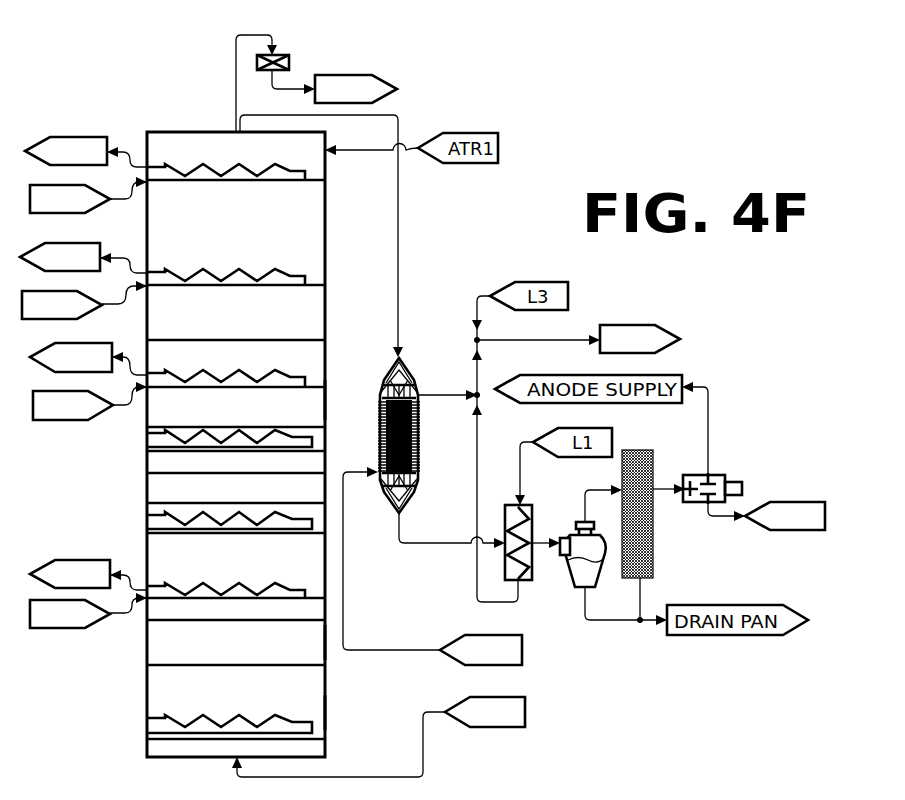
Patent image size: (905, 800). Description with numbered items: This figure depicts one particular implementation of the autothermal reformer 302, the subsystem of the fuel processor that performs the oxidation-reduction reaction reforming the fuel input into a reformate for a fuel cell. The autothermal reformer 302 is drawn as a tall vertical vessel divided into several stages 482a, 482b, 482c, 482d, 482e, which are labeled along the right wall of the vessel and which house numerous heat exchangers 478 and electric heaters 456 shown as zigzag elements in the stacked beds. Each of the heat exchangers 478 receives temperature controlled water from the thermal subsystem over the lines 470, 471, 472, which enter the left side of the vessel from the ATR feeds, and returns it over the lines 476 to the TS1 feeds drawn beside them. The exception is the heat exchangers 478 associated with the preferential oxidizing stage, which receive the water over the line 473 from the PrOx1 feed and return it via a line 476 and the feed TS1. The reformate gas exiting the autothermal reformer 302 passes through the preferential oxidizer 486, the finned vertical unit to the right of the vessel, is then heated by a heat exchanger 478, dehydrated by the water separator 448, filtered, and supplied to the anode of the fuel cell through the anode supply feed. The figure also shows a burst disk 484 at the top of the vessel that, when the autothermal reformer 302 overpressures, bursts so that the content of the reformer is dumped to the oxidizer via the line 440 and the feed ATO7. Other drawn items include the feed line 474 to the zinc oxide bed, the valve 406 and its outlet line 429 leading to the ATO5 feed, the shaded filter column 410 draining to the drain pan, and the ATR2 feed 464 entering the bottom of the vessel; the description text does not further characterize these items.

The autothermal reformer 302 is at (135, 41).
The burst disk 484 is at (286, 55).
The line 440 is at (291, 86).
The lines 476 is at (131, 145).
The line 470 is at (128, 199).
The line 471 is at (133, 300).
The line 472 is at (118, 410).
The liquid inlet 474 is at (147, 586).
The heat exchangers 478 is at (273, 184).
The electric heaters 456 is at (252, 426).
The stage 482a is at (328, 713).
The stage 482b is at (328, 643).
The stage 482c is at (328, 549).
The stage 482d is at (328, 403).
The stage 482e is at (327, 233).
The preferential oxidizer 486 is at (403, 368).
The water separator 448 is at (572, 535).
The valve 406 is at (723, 477).
The outlet line 429 is at (708, 516).
The humidifier 410 is at (654, 536).
The line 473 is at (454, 663).
The reformer air inlet 464 is at (527, 709).